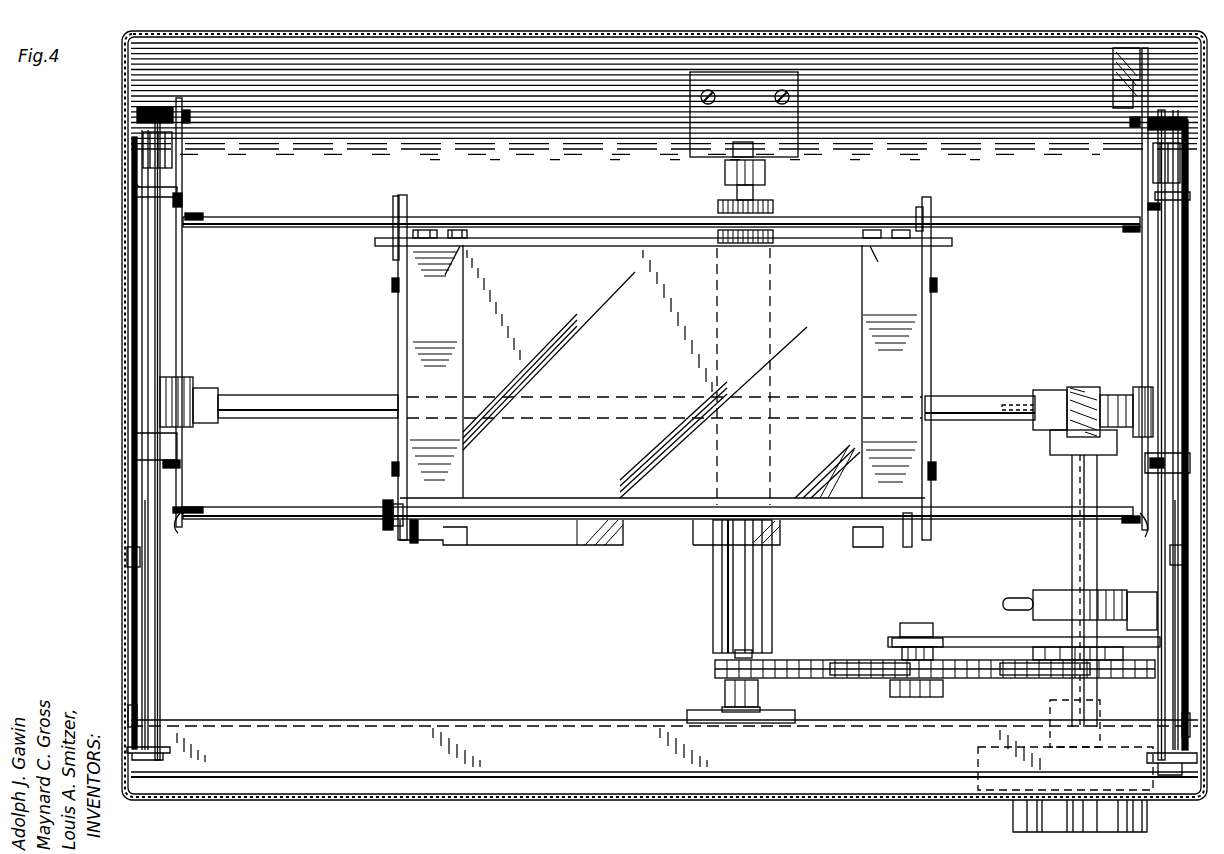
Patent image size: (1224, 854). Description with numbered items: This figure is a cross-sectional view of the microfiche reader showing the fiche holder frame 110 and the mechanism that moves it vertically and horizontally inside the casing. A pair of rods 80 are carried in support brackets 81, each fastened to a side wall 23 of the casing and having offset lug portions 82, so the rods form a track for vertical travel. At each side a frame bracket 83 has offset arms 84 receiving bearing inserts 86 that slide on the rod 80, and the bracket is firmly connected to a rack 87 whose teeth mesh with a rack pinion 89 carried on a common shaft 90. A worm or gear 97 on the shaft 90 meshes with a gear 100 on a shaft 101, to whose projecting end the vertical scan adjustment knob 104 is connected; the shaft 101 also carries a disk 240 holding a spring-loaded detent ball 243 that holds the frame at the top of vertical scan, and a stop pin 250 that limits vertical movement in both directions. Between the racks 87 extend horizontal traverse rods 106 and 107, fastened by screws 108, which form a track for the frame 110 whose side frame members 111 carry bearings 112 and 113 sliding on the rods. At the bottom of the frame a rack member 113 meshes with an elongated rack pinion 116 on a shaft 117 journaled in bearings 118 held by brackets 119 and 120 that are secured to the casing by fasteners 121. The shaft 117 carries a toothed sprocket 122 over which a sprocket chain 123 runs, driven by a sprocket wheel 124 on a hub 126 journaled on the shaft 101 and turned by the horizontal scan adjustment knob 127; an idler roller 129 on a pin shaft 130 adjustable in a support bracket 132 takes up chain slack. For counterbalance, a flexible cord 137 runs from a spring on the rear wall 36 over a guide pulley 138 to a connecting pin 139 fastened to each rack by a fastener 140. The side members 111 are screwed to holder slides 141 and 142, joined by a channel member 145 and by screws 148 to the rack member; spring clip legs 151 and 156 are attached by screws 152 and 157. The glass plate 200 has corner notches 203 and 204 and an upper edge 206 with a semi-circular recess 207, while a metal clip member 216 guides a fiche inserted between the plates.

The side wall 23 is at (126, 307).
The rear wall 36 is at (920, 38).
The rod 80 is at (160, 628).
The support bracket 81 is at (133, 677).
The offset lug portion 82 is at (172, 152).
The frame bracket 83 is at (177, 303).
The offset arm 84 is at (133, 192).
The bearing insert 86 is at (182, 198).
The rack 87 is at (185, 336).
The rack pinion 89 is at (195, 385).
The shaft 90 is at (360, 396).
The worm or gear 97 is at (1082, 388).
The gear 100 is at (1022, 405).
The shaft 101 is at (1078, 481).
The vertical scan adjustment knob 104 is at (1020, 820).
The horizontal traverse rod 106 is at (357, 216).
The horizontal traverse rod 107 is at (325, 506).
The screw 108 is at (186, 216).
The frame 110 is at (565, 263).
The side frame member 111 is at (396, 326).
The bearing 112 is at (394, 200).
The bearing / rack member 113 is at (383, 522).
The elongated rack pinion 116 is at (733, 620).
The shaft 117 is at (752, 656).
The bearing 118 is at (765, 170).
The bracket 119 is at (710, 150).
The bracket 120 is at (730, 723).
The fastener 121 is at (776, 103).
The toothed sprocket 122 is at (715, 666).
The sprocket chain 123 is at (868, 660).
The sprocket wheel 124 is at (1075, 678).
The hub 126 is at (1072, 705).
The horizontal scan adjustment knob 127 is at (978, 762).
The idler roller 129 is at (905, 692).
The pin shaft 130 is at (918, 625).
The support bracket 132 is at (980, 648).
The flexible cord 137 is at (136, 476).
The guide pulley 138 is at (160, 552).
The connecting pin 139 is at (165, 108).
The fastener / screw 140 is at (190, 123).
The holder slide 141 is at (396, 342).
The holder slide 142 is at (908, 334).
The channel member 145 is at (668, 500).
The screw 148 is at (425, 232).
The leg 151 is at (442, 270).
The screw 152 is at (455, 230).
The leg 156 is at (884, 265).
The screw 157 is at (872, 232).
The glass plate 200 is at (535, 487).
The notch 203 is at (450, 540).
The notch 204 is at (843, 545).
The upper edge 206 is at (590, 545).
The semi-circular recess 207 is at (700, 545).
The metal clip member 216 is at (428, 530).
The disk 240 is at (1060, 590).
The detent ball 243 is at (1042, 590).
The stop pin 250 is at (1015, 598).